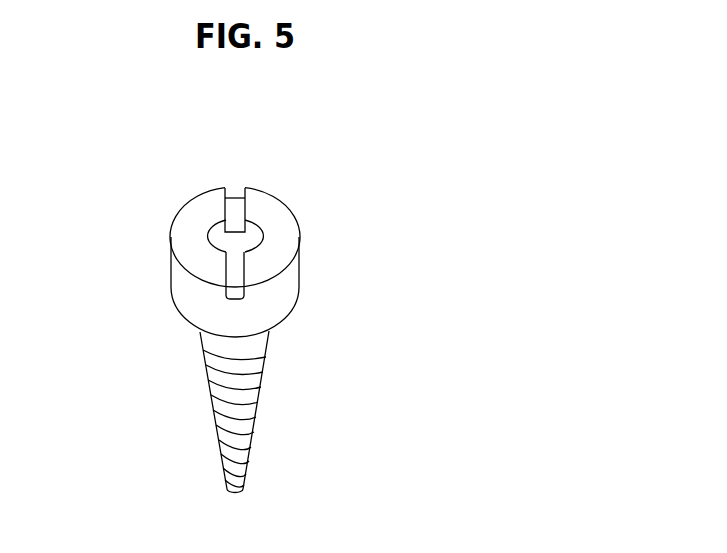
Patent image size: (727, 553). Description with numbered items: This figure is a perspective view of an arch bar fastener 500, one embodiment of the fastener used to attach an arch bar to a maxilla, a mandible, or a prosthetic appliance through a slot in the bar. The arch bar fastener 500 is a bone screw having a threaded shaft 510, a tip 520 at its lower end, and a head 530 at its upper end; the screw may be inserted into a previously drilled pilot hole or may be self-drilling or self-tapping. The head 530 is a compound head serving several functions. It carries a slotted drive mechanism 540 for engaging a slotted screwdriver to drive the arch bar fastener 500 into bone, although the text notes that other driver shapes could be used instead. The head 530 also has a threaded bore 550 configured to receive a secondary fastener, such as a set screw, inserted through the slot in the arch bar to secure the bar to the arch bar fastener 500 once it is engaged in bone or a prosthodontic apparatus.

The arch bar fastener 500 is at (206, 498).
The threaded shaft 510 is at (225, 398).
The tip 520 is at (240, 493).
The head 530 is at (270, 293).
The slotted drive mechanism 540 is at (238, 188).
The threaded bore 550 is at (217, 238).